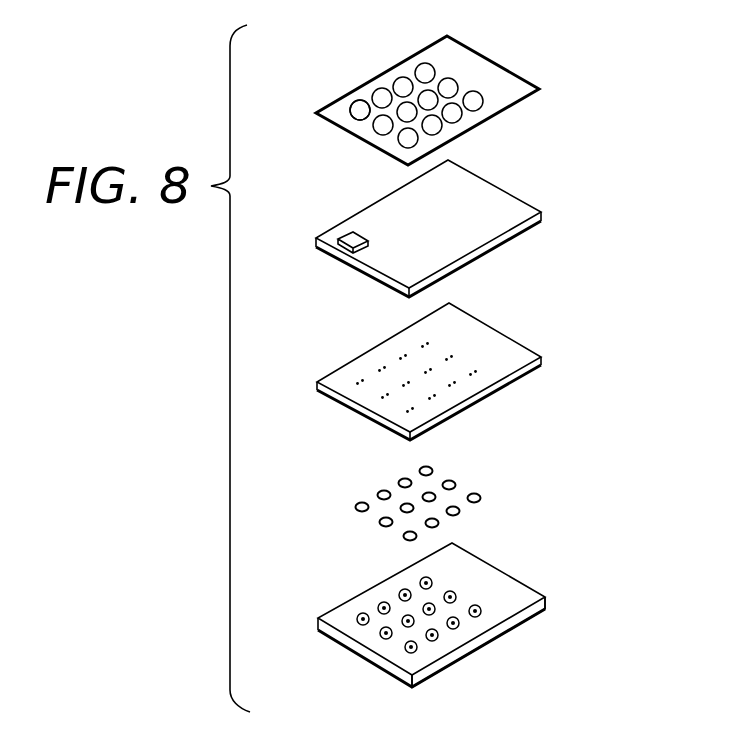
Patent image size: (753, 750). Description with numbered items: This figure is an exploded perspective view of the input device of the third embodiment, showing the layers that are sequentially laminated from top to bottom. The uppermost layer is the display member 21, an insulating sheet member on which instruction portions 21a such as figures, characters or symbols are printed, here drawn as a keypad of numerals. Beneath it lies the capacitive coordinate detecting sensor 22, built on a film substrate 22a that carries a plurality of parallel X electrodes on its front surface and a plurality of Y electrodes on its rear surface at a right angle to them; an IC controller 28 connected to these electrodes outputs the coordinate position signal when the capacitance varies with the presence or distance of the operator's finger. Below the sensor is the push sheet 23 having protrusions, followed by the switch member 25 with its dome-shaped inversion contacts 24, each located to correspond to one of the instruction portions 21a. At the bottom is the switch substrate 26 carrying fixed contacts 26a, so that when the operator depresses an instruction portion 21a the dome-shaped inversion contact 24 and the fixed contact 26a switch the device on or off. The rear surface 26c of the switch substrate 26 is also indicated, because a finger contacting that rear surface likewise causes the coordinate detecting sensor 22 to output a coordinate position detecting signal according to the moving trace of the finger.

The display member 21 is at (493, 68).
The instruction portion 21a is at (360, 105).
The coordinate detecting sensor 22 is at (485, 190).
The film substrate 22a is at (503, 223).
The push sheet 23 is at (483, 337).
The dome-shaped inversion contact 24 is at (478, 497).
The switch member 25 is at (487, 572).
The switch substrate 26 is at (502, 605).
The fixed contact 26a is at (360, 617).
The rear surface of the switch substrate 26c is at (483, 645).
The IC controller 28 is at (350, 233).